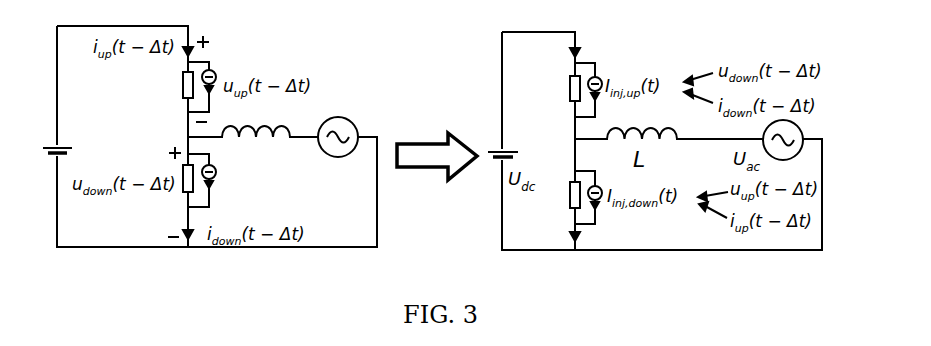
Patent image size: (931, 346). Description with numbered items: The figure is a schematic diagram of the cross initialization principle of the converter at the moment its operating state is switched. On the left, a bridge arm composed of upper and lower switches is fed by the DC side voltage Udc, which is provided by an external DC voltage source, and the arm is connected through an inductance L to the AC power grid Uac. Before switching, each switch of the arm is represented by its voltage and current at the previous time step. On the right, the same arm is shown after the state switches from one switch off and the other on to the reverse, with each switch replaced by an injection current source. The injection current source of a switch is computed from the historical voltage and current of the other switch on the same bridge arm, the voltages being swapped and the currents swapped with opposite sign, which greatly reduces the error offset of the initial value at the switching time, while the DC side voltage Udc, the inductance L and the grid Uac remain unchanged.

The inductor L is at (253, 150).
The AC power grid voltage Uac is at (334, 152).
The DC side voltage Udc is at (79, 143).